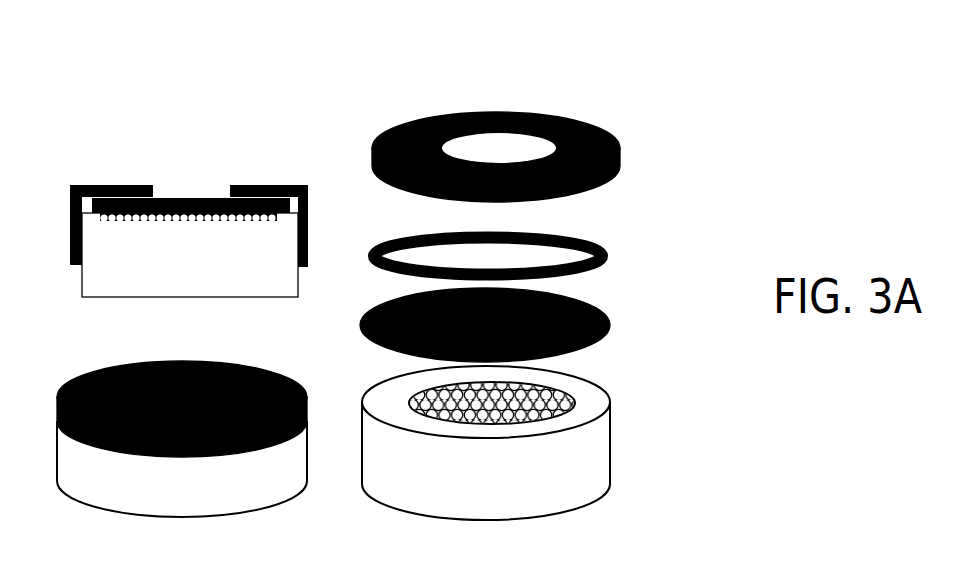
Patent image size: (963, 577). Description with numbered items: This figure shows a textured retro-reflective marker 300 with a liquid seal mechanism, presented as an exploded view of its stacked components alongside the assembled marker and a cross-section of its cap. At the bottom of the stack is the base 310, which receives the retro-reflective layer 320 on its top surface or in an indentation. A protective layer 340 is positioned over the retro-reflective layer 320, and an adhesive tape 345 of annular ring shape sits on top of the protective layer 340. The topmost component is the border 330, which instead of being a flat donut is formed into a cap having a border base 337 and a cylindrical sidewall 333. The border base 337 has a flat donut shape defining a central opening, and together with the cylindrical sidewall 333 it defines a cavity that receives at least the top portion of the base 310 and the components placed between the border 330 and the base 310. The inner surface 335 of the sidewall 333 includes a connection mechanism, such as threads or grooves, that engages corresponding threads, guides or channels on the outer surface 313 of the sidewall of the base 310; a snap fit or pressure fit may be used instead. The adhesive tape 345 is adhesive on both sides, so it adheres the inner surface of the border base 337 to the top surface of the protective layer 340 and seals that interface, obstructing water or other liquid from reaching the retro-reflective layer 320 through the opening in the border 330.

The textured retro-reflective marker 300 is at (737, 97).
The base 310 is at (559, 483).
The outer surface of the sidewall of the base 313 is at (84, 255).
The retro-reflective layer 320 is at (556, 404).
The border 330 is at (573, 113).
The cylindrical sidewall 333 is at (622, 169).
The inner surface of the sidewall 335 is at (72, 238).
The border base 337 is at (448, 112).
The protective layer 340 is at (594, 318).
The adhesive tape 345 is at (615, 250).